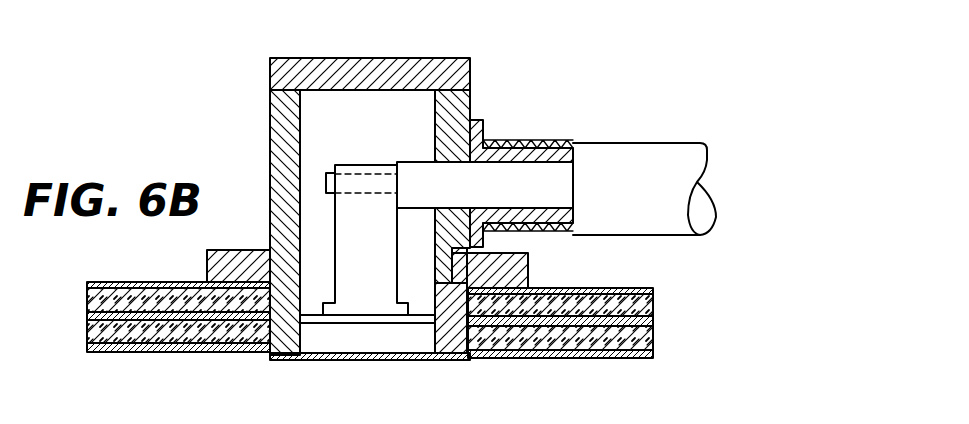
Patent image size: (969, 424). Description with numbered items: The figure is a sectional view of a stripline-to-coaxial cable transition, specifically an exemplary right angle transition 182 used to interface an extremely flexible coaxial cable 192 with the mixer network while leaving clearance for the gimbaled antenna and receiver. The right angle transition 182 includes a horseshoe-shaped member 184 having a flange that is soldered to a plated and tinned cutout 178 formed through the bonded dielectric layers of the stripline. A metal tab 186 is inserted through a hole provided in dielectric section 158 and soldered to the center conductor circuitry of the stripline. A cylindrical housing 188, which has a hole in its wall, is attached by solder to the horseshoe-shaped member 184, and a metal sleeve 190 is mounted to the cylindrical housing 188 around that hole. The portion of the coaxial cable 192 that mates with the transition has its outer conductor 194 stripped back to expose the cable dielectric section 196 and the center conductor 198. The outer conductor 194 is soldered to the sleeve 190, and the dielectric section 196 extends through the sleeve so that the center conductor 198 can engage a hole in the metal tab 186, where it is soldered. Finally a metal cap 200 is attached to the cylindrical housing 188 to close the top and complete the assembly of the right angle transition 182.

The dielectric section 158 is at (612, 288).
The tinned cutout 178 is at (487, 358).
The right angle transition 182 is at (321, 188).
The horseshoe-shaped member 184 is at (413, 360).
The metal tab 186 is at (340, 233).
The cylindrical housing 188 is at (258, 137).
The metal sleeve 190 is at (486, 130).
The coaxial cable 192 is at (712, 210).
The outer conductor 194 is at (538, 140).
The dielectric section 196 is at (420, 162).
The center conductor 198 is at (320, 173).
The metal cap 200 is at (352, 58).